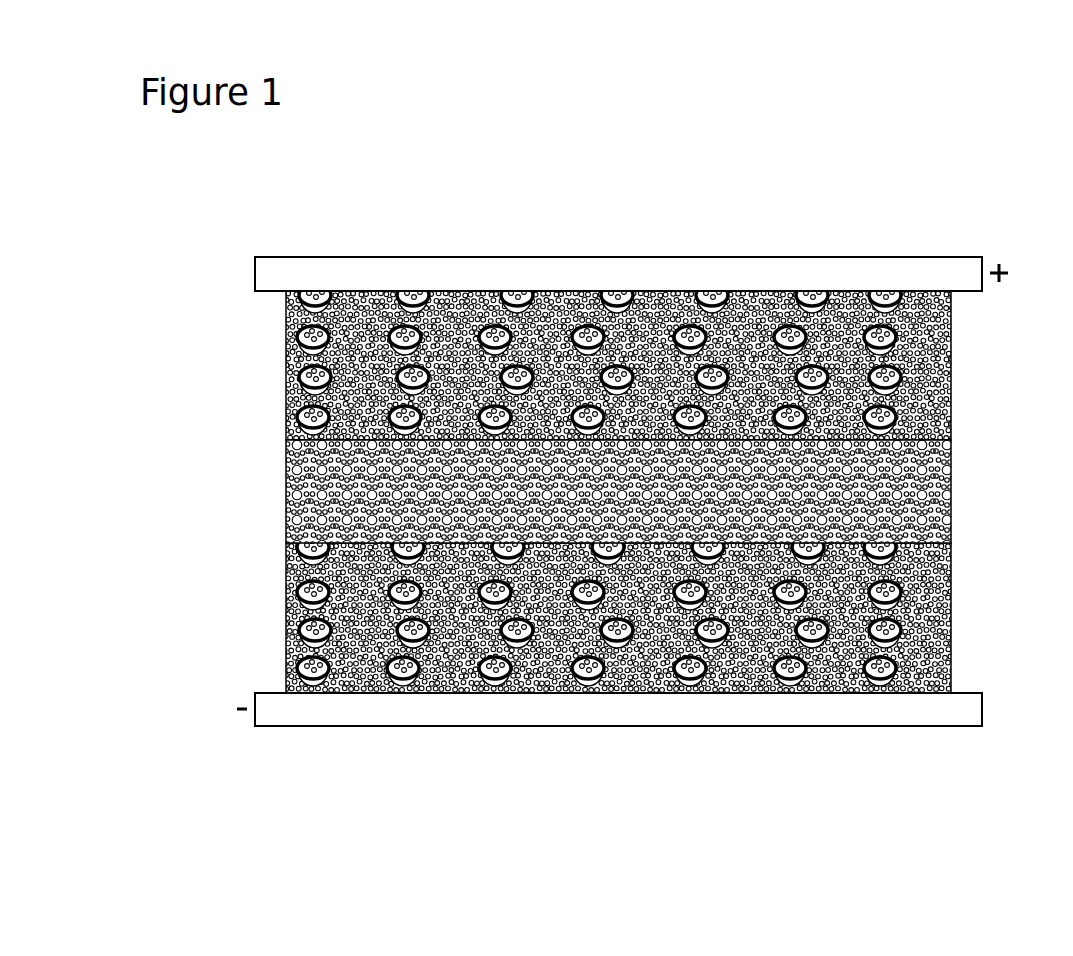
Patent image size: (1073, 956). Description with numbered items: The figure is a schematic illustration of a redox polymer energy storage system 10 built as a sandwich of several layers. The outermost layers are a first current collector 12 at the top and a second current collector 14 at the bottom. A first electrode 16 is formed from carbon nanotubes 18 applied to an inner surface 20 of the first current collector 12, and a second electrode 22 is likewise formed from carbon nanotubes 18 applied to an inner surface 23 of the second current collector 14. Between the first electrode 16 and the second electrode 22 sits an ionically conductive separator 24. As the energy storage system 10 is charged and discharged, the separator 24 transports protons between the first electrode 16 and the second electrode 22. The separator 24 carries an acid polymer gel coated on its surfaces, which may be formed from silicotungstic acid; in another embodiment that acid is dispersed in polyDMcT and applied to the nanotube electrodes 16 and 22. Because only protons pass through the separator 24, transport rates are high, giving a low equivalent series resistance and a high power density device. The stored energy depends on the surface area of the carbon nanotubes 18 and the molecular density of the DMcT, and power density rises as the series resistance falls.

The redox polymer energy storage system 10 is at (893, 158).
The first current collector 12 is at (948, 257).
The second current collector 14 is at (955, 724).
The first electrode 16 is at (955, 354).
The carbon nanotubes 18 is at (893, 298).
The inner surface of first current collector 20 is at (853, 291).
The second electrode 22 is at (955, 610).
The inner surface of second current collector 23 is at (834, 693).
The ionically conductive separator 24 is at (955, 462).